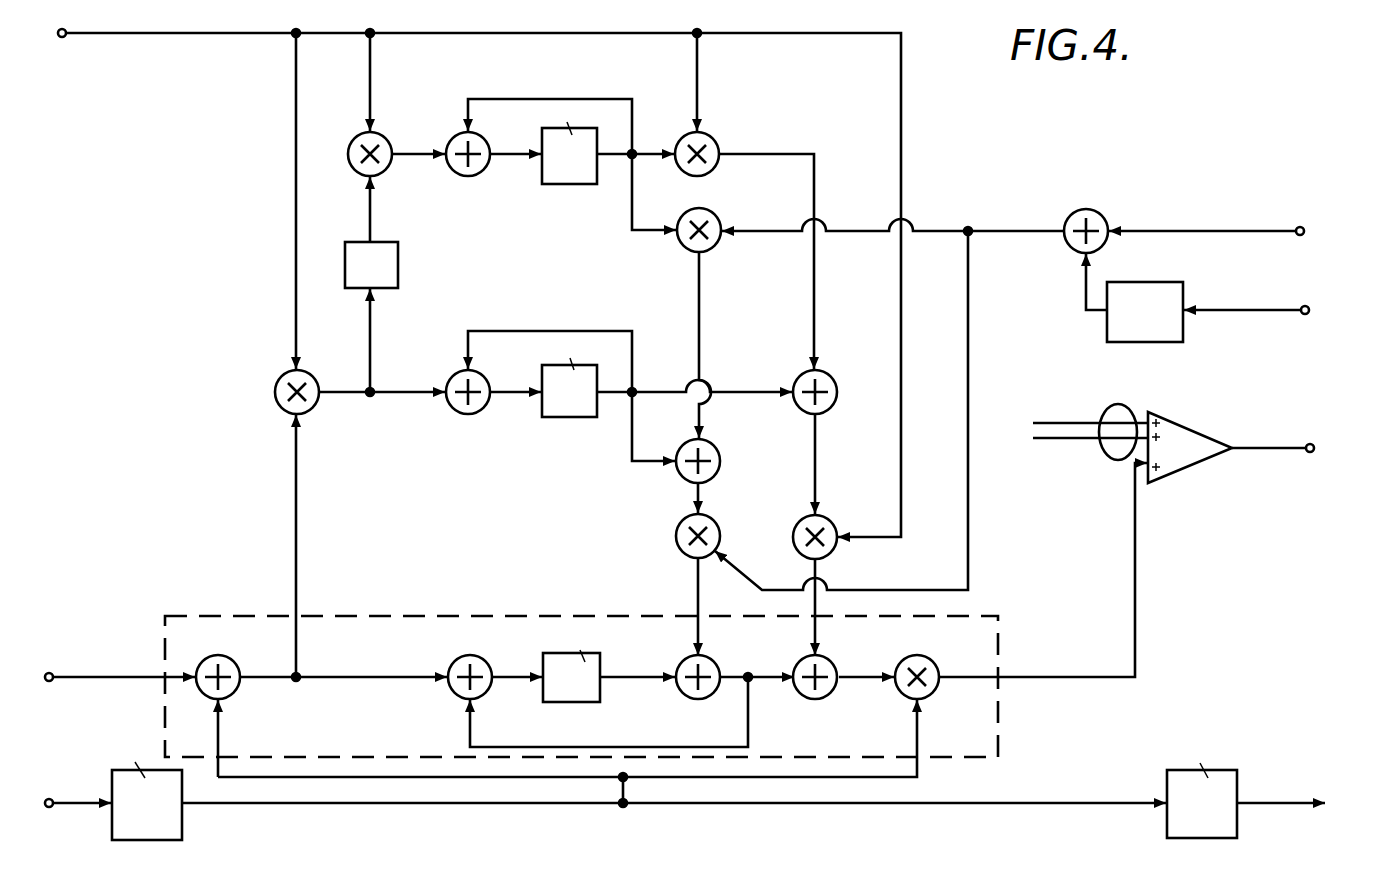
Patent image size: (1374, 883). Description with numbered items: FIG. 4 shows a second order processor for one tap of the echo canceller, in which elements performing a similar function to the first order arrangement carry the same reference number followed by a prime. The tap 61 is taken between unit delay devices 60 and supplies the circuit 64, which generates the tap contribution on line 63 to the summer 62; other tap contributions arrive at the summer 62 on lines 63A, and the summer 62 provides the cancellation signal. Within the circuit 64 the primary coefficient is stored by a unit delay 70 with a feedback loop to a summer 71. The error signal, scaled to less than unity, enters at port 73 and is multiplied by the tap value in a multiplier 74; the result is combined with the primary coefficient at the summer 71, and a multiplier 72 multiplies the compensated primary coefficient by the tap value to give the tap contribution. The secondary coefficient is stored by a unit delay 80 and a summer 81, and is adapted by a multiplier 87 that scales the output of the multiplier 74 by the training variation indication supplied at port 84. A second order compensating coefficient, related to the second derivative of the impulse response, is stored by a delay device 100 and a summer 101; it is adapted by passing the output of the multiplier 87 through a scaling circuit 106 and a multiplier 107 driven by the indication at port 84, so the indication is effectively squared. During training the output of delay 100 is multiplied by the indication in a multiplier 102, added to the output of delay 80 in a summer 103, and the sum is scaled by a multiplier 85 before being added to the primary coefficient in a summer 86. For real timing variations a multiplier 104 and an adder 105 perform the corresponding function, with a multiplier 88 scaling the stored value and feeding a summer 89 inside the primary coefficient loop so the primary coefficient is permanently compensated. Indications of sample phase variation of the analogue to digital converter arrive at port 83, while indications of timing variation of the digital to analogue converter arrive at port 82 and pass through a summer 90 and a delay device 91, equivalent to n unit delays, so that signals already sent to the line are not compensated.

The port 84 is at (62, 38).
The multiplier 107 is at (378, 140).
The summer 101 is at (466, 177).
The delay device 100 is at (577, 184).
The multiplier 102 is at (710, 141).
The multiplier 104 is at (715, 215).
The scaling circuit 106 is at (398, 266).
The multiplier 87 is at (275, 382).
The summer 81 is at (470, 414).
The unit delay 80 is at (562, 417).
The summer 103 is at (830, 375).
The adder 105 is at (720, 460).
The multiplier 88 is at (676, 540).
The multiplier 85 is at (834, 550).
The summer 90 is at (1092, 220).
The delay device 91 is at (1180, 292).
The port 83 is at (1304, 226).
The port 82 is at (1305, 315).
The lines 63A is at (1125, 405).
The summer 62 is at (1231, 447).
The line 63 is at (1136, 560).
The circuit 64 is at (165, 622).
The port 73 is at (49, 682).
The multiplier 74 is at (240, 693).
The summer 71 is at (455, 695).
The unit delay 70 is at (590, 702).
The summer 89 is at (678, 662).
The summer 86 is at (829, 695).
The multiplier 72 is at (933, 693).
The unit delay device 60 is at (685, 793).
The tap 61 is at (627, 803).